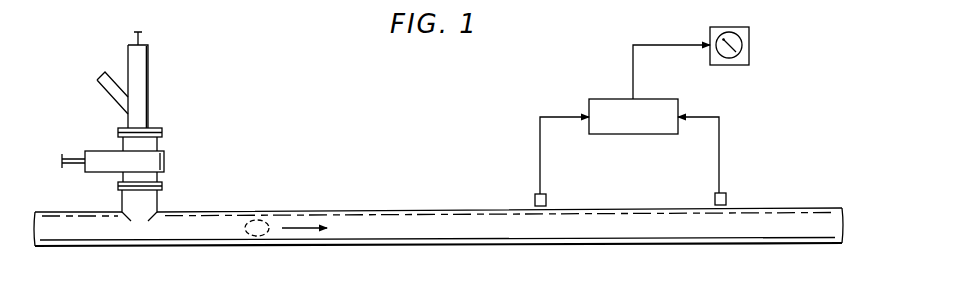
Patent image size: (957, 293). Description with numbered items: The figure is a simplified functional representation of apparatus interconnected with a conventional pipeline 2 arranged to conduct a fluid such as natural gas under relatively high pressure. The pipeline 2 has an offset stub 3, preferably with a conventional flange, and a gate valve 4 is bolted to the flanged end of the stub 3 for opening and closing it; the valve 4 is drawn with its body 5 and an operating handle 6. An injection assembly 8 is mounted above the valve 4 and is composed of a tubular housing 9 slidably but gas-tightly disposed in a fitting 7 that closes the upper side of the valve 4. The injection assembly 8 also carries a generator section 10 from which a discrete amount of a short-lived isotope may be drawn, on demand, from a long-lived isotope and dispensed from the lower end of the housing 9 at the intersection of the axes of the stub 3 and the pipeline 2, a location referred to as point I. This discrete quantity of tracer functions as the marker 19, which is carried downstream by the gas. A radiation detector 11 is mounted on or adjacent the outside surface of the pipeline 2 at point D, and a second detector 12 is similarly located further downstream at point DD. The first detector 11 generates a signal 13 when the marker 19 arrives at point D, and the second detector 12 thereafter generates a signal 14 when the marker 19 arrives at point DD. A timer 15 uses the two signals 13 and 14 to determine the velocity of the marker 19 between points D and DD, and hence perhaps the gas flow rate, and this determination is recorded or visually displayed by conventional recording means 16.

The pipeline 2 is at (356, 208).
The offset stub 3 is at (158, 203).
The gate valve 4 is at (178, 153).
The valve body 5 is at (165, 167).
The valve handle 6 is at (74, 153).
The fitting 7 is at (152, 127).
The injection assembly 8 is at (158, 60).
The tubular housing 9 is at (150, 97).
The generator section 10 is at (113, 97).
The radiation detector 11 is at (548, 200).
The second detector 12 is at (728, 199).
The signal 13 is at (540, 134).
The signal 14 is at (719, 133).
The timer 15 is at (637, 141).
The recording means 16 is at (750, 45).
The marker 19 is at (252, 240).
The point I is at (139, 250).
The point D is at (537, 248).
The point DD is at (722, 247).